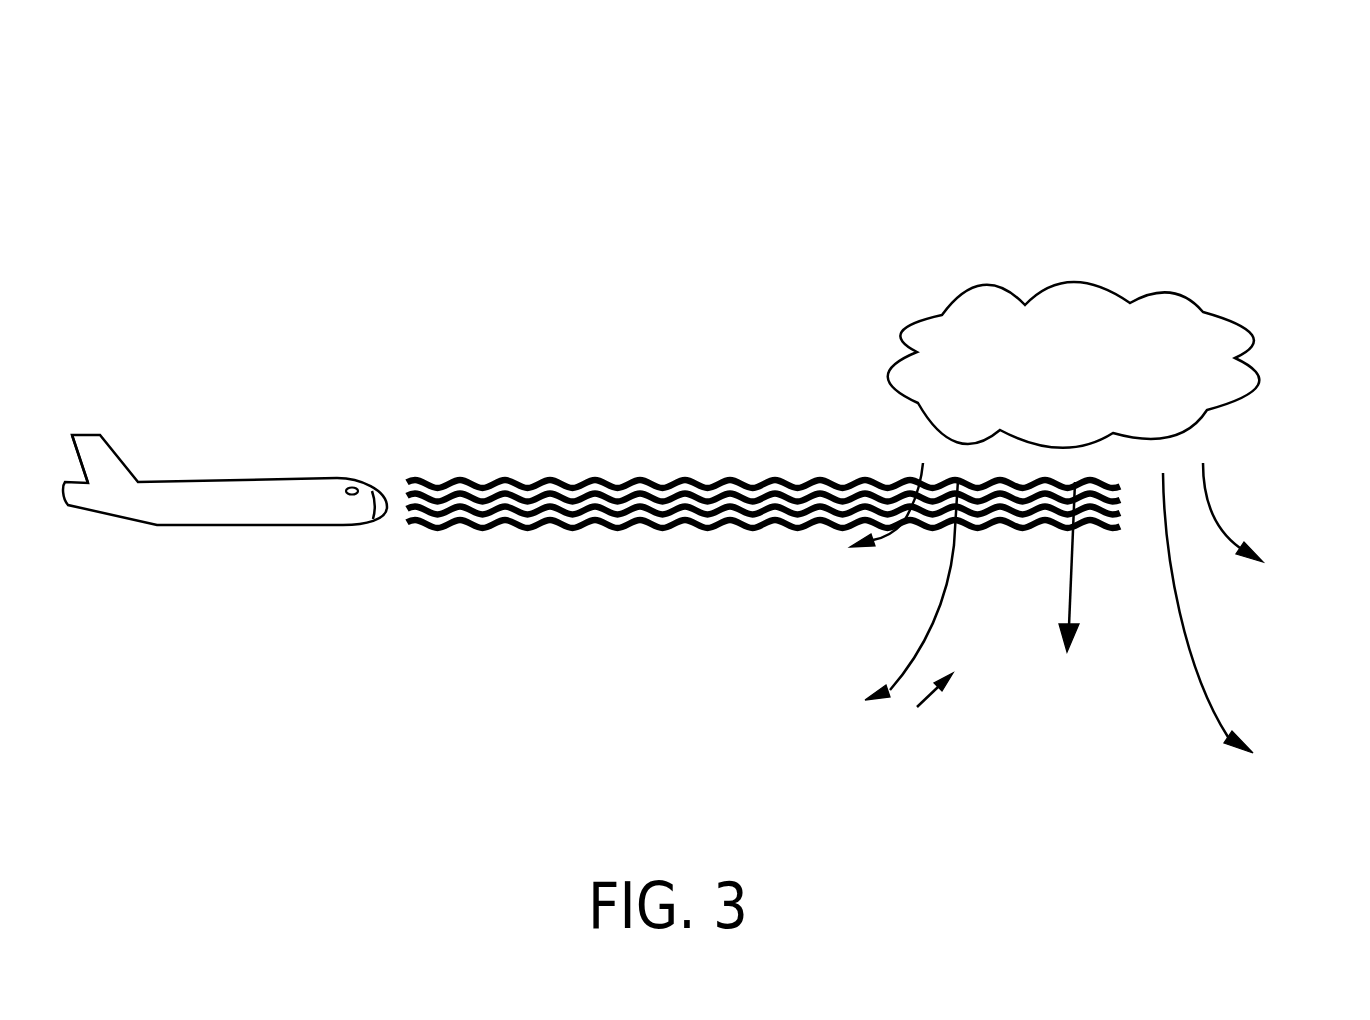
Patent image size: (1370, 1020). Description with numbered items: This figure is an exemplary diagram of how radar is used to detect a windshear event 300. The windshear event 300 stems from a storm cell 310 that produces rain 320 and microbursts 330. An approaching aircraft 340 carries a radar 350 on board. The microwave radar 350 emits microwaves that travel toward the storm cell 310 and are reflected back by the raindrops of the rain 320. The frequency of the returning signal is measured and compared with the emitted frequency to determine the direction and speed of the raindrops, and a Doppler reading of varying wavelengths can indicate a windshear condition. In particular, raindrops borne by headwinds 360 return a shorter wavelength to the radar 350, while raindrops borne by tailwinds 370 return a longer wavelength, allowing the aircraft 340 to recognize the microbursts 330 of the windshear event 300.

The windshear event 300 is at (1180, 155).
The storm cell 310 is at (1138, 317).
The rain 320 is at (1118, 467).
The microbursts 330 is at (1010, 618).
The approaching aircraft 340 is at (298, 517).
The radar 350 is at (375, 495).
The headwinds 360 is at (902, 533).
The tailwinds 370 is at (1200, 703).